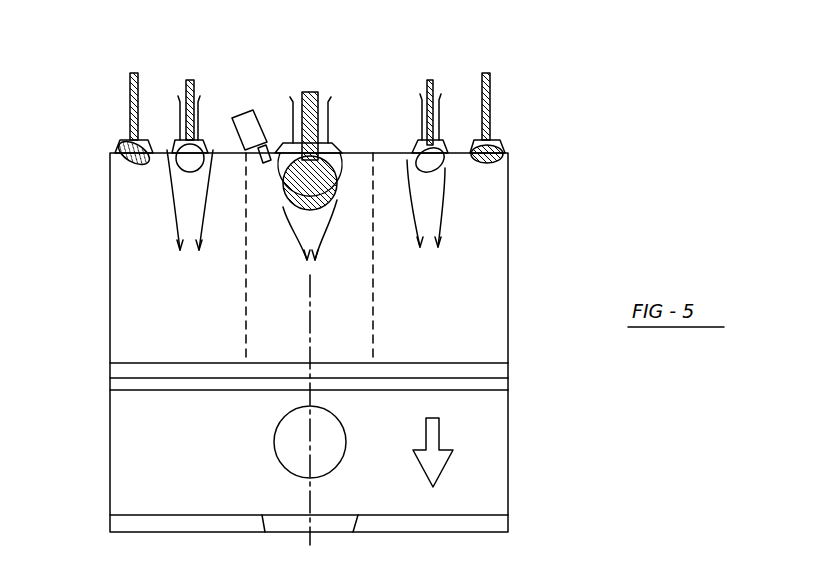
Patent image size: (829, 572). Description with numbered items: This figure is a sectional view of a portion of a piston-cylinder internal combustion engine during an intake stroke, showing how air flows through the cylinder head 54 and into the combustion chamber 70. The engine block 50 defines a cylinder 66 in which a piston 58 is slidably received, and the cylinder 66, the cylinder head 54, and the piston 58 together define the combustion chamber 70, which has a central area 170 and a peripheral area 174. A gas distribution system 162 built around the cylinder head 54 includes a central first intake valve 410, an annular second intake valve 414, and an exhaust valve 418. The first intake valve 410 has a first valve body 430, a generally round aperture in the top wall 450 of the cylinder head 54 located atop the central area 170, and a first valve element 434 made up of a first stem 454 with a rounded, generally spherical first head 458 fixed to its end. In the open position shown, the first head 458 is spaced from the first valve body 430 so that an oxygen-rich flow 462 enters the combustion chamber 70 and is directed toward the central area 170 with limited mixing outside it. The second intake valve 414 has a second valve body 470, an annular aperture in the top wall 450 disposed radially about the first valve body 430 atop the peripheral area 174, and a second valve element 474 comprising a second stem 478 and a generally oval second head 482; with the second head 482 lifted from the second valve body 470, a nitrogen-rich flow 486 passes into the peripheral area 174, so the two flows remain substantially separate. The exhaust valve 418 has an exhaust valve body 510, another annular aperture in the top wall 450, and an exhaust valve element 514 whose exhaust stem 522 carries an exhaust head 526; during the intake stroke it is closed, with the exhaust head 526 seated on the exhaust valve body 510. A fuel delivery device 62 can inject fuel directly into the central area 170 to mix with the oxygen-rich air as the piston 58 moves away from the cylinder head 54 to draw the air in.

The engine block 50 is at (108, 522).
The cylinder head 54 is at (112, 150).
The piston 58 is at (132, 457).
The fuel delivery device 62 is at (245, 122).
The cylinder 66 is at (110, 307).
The combustion chamber 70 is at (133, 260).
The gas distribution system 162 is at (500, 110).
The central area 170 is at (352, 323).
The peripheral area 174 is at (150, 322).
The first intake valve 410 is at (290, 92).
The second intake valve 414 is at (442, 88).
The exhaust valve 418 is at (118, 88).
The first valve body 430 is at (342, 141).
The first valve element 434 is at (292, 212).
The top wall 450 is at (394, 153).
The first stem 454 is at (310, 93).
The first head 458 is at (340, 197).
The oxygen-rich flow 462 is at (297, 237).
The second valve body 470 is at (437, 140).
The second valve element 474 is at (440, 187).
The second stem 478 is at (423, 100).
The second head 482 is at (432, 163).
The nitrogen-rich flow 486 is at (447, 212).
The exhaust valve body 510 is at (150, 140).
The exhaust valve element 514 is at (150, 165).
The exhaust stem 522 is at (130, 108).
The exhaust head 526 is at (124, 160).